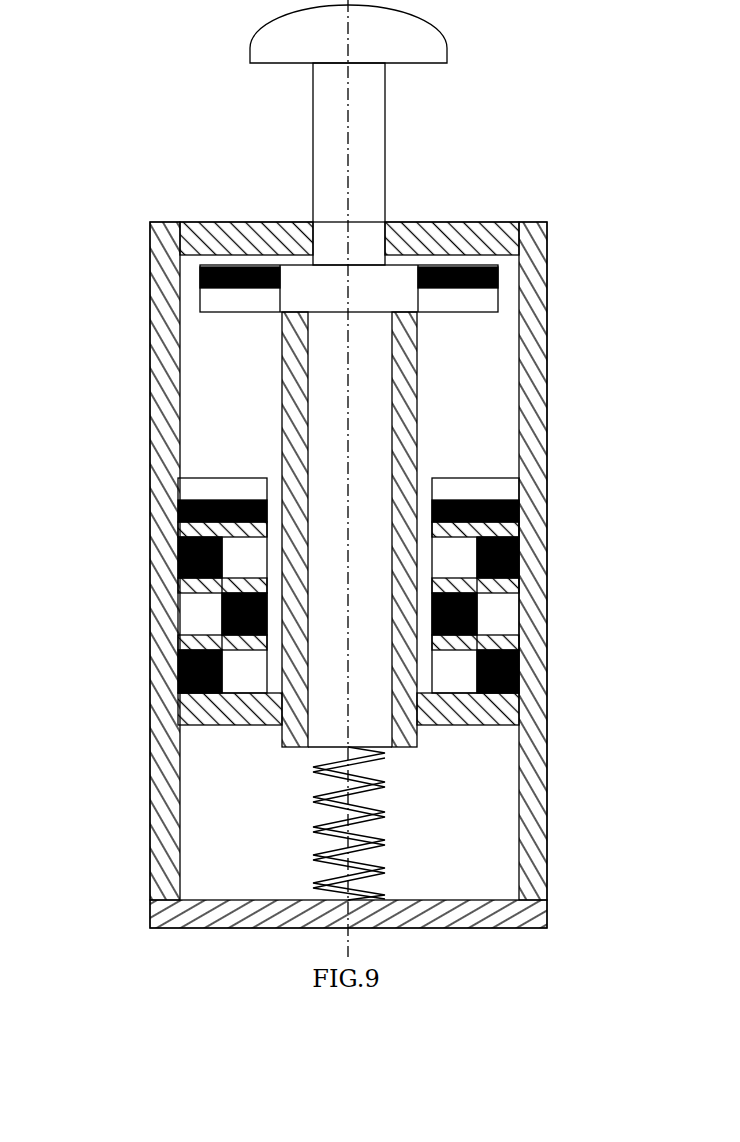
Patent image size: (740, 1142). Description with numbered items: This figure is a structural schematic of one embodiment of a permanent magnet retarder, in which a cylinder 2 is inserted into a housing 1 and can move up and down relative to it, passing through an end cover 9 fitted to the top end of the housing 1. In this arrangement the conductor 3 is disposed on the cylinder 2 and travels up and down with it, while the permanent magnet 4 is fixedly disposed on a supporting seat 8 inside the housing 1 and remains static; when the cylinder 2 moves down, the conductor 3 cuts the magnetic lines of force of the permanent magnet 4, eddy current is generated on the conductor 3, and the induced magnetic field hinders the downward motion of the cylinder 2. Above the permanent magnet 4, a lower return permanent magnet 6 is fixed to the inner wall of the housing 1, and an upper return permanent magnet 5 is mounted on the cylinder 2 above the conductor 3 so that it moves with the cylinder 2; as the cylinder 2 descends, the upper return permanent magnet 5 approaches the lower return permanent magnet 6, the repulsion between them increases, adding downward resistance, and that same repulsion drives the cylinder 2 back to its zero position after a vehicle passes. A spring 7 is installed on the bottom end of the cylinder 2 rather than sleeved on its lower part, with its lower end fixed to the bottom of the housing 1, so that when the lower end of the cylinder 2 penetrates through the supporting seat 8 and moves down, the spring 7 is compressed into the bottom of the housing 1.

The housing 1 is at (148, 627).
The cylinder 2 is at (376, 178).
The conductor 3 is at (176, 304).
The permanent magnet 4 is at (238, 358).
The upper return permanent magnet 5 is at (490, 475).
The lower return permanent magnet 6 is at (481, 667).
The spring 7 is at (306, 553).
The supporting seat 8 is at (523, 727).
The end cover 9 is at (492, 229).